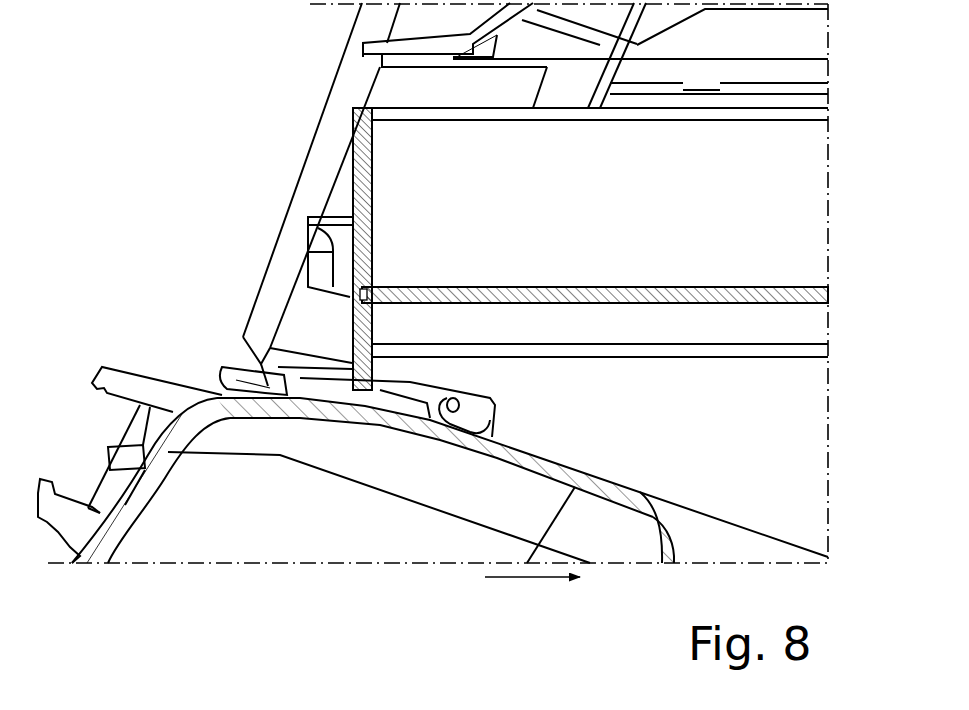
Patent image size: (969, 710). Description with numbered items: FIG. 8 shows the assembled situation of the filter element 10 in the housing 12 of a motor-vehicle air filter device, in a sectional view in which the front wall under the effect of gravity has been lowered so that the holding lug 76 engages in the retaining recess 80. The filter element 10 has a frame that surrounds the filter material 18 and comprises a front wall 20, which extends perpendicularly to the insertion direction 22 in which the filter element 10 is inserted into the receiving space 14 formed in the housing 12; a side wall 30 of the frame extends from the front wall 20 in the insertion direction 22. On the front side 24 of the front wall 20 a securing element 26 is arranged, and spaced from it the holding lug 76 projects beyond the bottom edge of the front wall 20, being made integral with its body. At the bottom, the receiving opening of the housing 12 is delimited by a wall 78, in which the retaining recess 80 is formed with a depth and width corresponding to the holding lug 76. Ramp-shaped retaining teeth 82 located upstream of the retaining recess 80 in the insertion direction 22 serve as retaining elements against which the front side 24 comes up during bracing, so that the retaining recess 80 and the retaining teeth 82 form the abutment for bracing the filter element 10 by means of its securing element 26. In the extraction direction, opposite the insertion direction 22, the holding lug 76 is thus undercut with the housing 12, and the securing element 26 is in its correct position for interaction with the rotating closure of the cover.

The filter element 10 is at (336, 135).
The housing 12 is at (378, 27).
The receiving space 14 is at (701, 78).
The filter material 18 is at (805, 173).
The front wall 20 is at (363, 165).
The insertion direction 22 is at (532, 597).
The front side 24 is at (353, 200).
The securing element 26 is at (296, 269).
The side wall 30 is at (755, 358).
The holding lug 76 is at (350, 350).
The wall 78 is at (272, 403).
The retaining recess 80 is at (368, 420).
The retaining teeth 82 is at (330, 418).